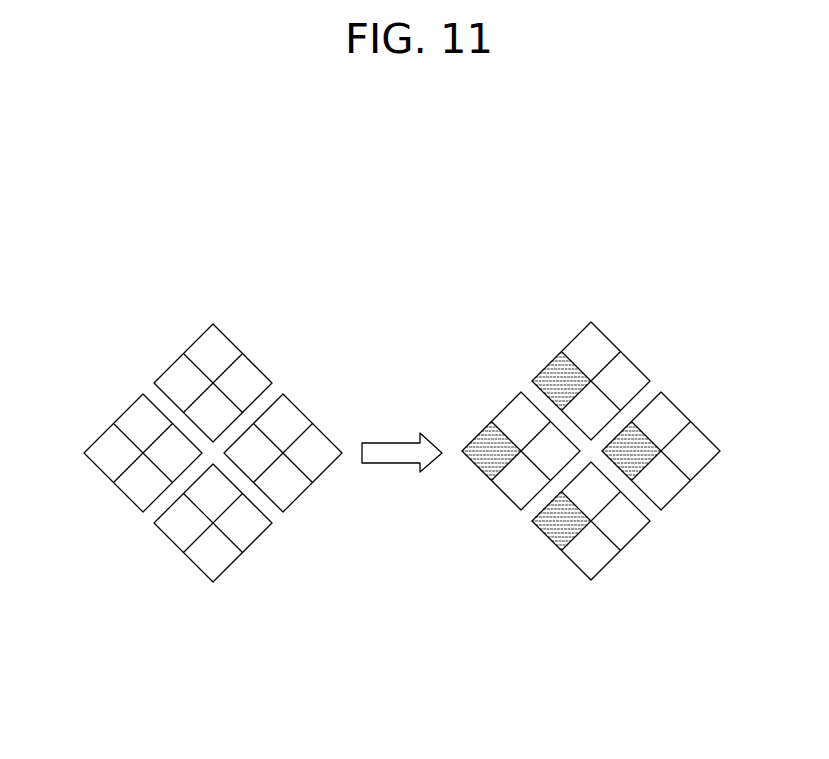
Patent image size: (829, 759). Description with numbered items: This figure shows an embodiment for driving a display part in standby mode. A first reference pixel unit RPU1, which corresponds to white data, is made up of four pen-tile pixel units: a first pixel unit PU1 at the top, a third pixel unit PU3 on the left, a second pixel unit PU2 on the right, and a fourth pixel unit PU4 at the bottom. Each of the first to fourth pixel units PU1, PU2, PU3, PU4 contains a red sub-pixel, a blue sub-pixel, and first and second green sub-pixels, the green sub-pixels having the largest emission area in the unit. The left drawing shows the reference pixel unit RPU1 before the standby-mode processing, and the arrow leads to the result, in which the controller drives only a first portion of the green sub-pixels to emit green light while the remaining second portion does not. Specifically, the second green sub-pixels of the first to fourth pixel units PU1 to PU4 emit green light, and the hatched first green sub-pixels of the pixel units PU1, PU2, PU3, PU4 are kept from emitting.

The first reference pixel unit RPU1 is at (402, 424).
The first pixel unit PU1 is at (175, 363).
The second pixel unit PU2 is at (320, 473).
The third pixel unit PU3 is at (102, 433).
The fourth pixel unit PU4 is at (253, 545).